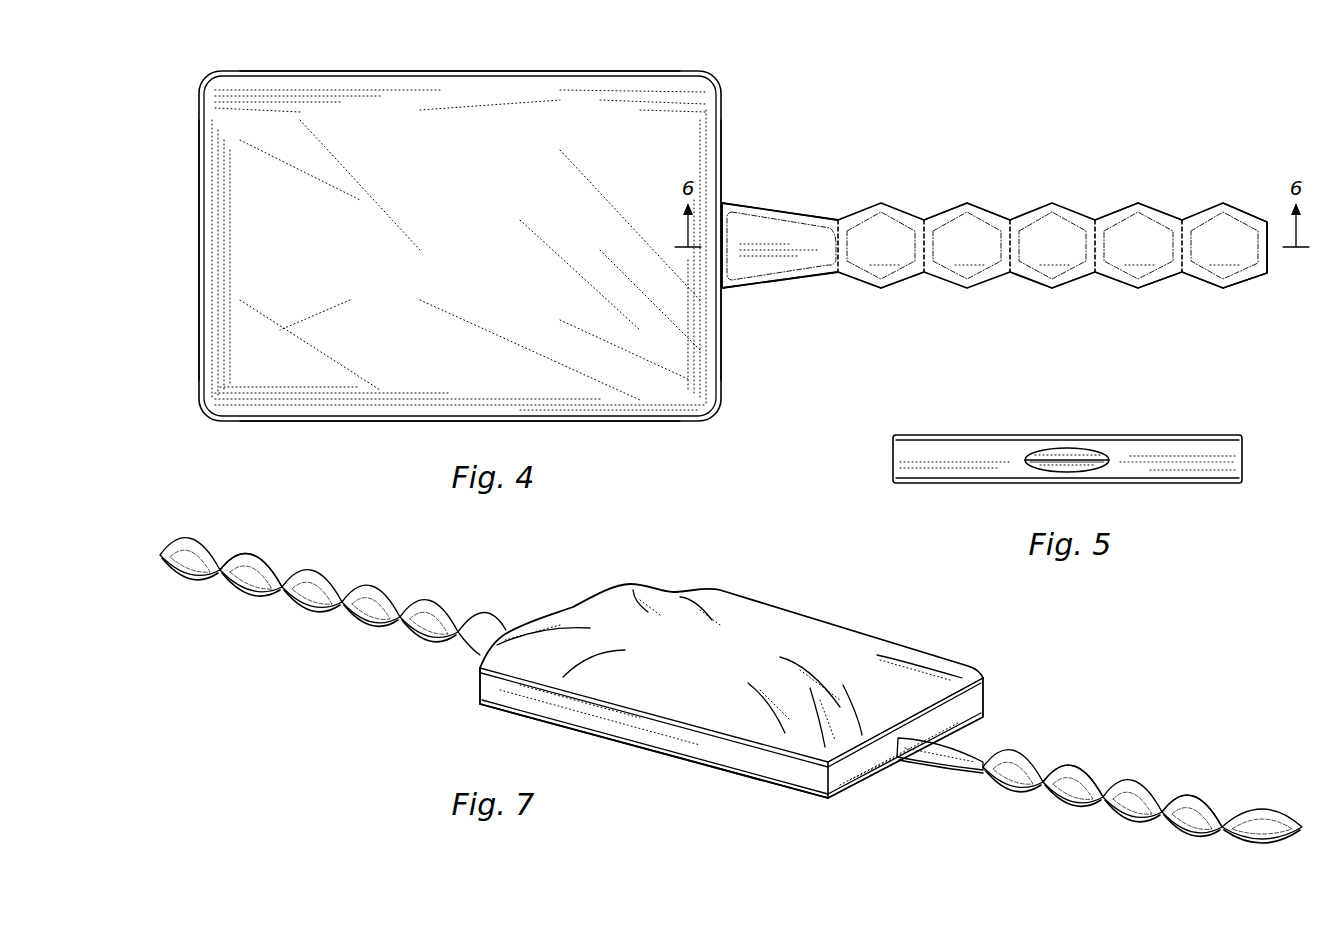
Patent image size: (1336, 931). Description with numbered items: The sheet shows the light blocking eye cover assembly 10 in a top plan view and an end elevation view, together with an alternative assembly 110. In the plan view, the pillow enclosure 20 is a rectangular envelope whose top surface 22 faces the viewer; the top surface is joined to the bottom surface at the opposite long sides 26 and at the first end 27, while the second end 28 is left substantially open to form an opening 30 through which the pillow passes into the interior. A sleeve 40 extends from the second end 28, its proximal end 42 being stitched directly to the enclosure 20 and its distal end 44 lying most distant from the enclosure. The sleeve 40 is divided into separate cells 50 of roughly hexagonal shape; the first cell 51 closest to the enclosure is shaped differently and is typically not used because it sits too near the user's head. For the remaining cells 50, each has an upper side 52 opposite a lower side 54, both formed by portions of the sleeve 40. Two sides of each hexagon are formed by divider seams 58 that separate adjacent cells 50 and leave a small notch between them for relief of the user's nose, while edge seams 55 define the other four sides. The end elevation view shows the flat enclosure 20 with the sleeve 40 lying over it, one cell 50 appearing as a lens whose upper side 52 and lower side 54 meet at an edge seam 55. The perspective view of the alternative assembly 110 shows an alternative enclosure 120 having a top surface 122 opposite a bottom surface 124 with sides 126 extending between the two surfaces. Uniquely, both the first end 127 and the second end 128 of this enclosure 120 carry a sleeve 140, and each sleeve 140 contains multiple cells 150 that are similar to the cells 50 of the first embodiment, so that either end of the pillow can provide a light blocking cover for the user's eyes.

In FIG. 4, the assembly 10 is at (903, 118).
In FIG. 5, the assembly 10 is at (1202, 503).
In FIG. 4, the pillow enclosure 20 is at (485, 52).
In FIG. 5, the pillow enclosure 20 is at (1208, 426).
In FIG. 4, the top surface 22 is at (409, 237).
In FIG. 4, the long sides 26 is at (371, 71).
In FIG. 4, the first end 27 is at (722, 352).
In FIG. 4, the second end 28 is at (199, 267).
In FIG. 4, the opening 30 is at (180, 212).
In FIG. 4, the sleeve 40 is at (1025, 182).
In FIG. 5, the sleeve 40 is at (1012, 442).
In FIG. 4, the proximal end 42 is at (745, 240).
In FIG. 4, the distal end 44 is at (1268, 265).
In FIG. 4, the cells 50 is at (871, 302).
In FIG. 4, the first cell 51 is at (779, 196).
In FIG. 4, the upper side 52 is at (861, 251).
In FIG. 5, the upper side 52 is at (1067, 449).
In FIG. 5, the lower side 54 is at (1060, 473).
In FIG. 4, the edge seams 55 is at (944, 212).
In FIG. 5, the edge seams 55 is at (1067, 472).
In FIG. 4, the divider seams 58 is at (836, 250).
In FIG. 7, the alternative assembly 110 is at (813, 580).
In FIG. 7, the alternative enclosure 120 is at (863, 617).
In FIG. 7, the top surface 122 is at (681, 671).
In FIG. 7, the bottom surface 124 is at (780, 790).
In FIG. 7, the sides 126 is at (993, 698).
In FIG. 7, the first end 127 is at (878, 769).
In FIG. 7, the second end 128 is at (482, 679).
In FIG. 7, the sleeves 140 is at (382, 551).
In FIG. 7, the cells 150 is at (257, 590).